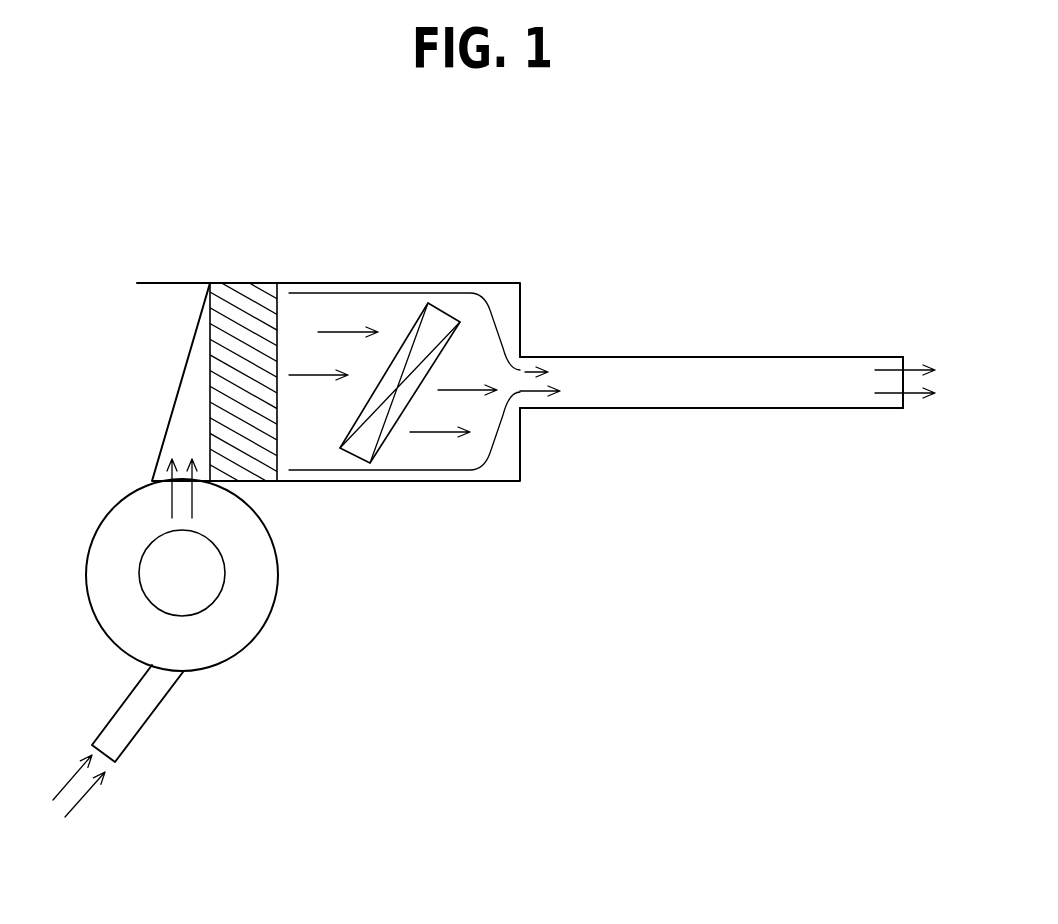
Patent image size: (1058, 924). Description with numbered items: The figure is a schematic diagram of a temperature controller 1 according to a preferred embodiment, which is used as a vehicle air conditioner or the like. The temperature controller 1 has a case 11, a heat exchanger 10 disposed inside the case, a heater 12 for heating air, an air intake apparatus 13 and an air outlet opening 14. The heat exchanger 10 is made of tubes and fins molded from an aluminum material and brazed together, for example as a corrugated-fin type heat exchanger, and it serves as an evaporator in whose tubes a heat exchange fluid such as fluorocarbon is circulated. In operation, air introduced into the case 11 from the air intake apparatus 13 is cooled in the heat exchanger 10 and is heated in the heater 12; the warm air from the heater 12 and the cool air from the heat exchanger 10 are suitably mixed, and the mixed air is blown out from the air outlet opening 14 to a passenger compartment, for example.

The temperature controller 1 is at (387, 250).
The heat exchanger 10 is at (242, 302).
The case 11 is at (327, 283).
The heater 12 is at (435, 327).
The air intake apparatus 13 is at (120, 497).
The air outlet opening 14 is at (567, 357).